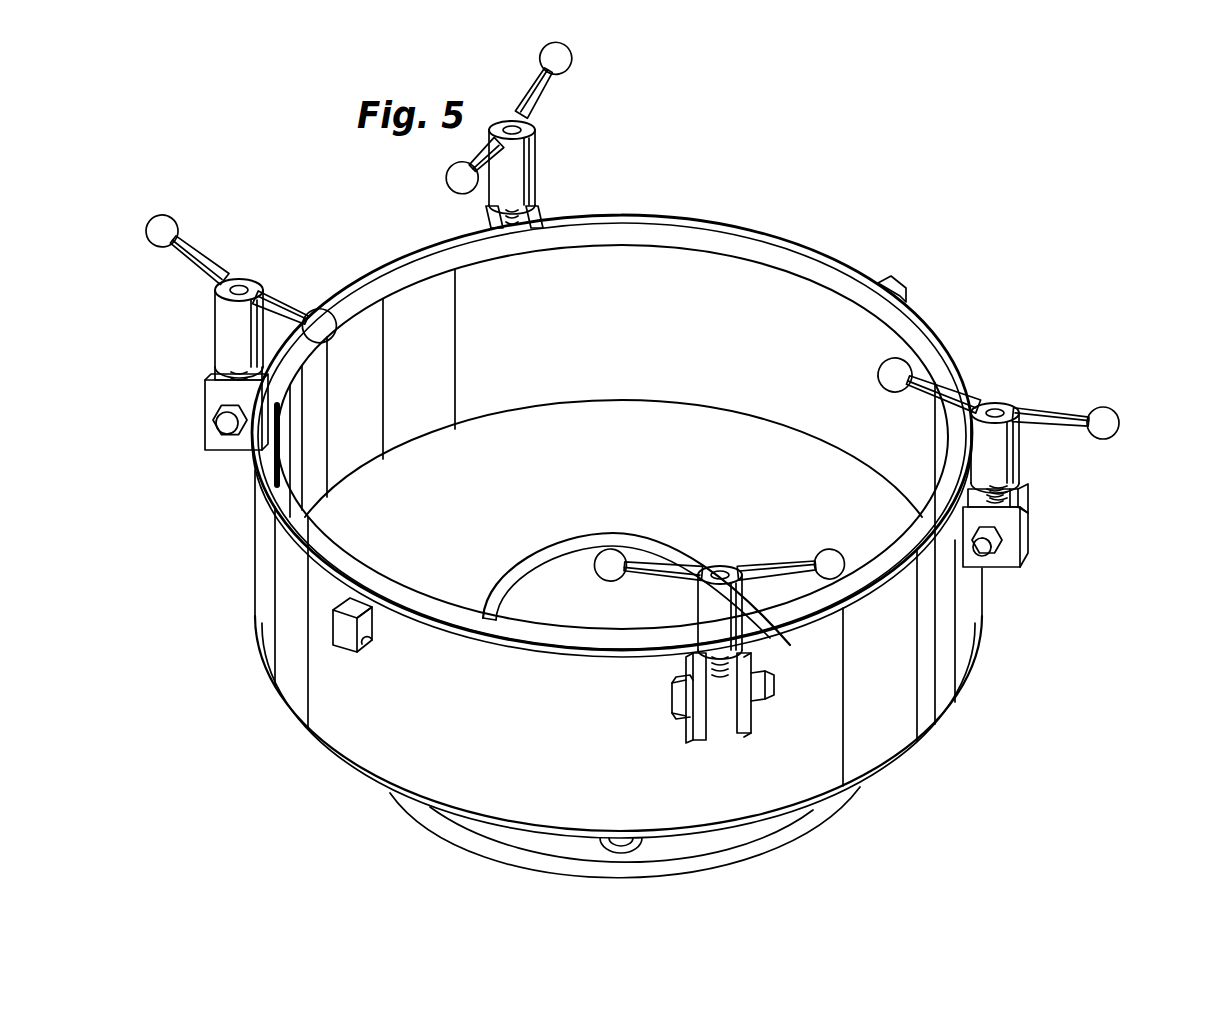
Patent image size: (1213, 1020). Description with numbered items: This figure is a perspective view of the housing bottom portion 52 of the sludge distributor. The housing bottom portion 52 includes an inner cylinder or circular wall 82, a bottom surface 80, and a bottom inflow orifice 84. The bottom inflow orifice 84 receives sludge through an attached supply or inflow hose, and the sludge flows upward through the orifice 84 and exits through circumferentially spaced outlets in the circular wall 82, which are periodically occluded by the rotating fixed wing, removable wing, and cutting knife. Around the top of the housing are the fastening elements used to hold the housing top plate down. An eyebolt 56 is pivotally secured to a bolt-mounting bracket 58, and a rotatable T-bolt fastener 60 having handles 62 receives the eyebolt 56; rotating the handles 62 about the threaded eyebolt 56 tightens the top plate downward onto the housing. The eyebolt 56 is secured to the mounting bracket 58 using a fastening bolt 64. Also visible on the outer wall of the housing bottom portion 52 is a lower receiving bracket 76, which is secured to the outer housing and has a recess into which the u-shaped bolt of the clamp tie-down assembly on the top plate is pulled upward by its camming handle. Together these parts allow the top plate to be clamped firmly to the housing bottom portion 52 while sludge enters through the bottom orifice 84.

The housing bottom portion 52 is at (541, 730).
The eyebolt 56 is at (1030, 500).
The bolt-mounting bracket 58 is at (1033, 528).
The T-bolt fastener 60 is at (1032, 420).
The handles 62 is at (1112, 426).
The fastening bolt 64 is at (1000, 566).
The lower receiving bracket 76 is at (373, 643).
The bottom surface 80 is at (639, 495).
The inner cylinder or circular wall 82 is at (631, 348).
The bottom inflow orifice 84 is at (594, 626).